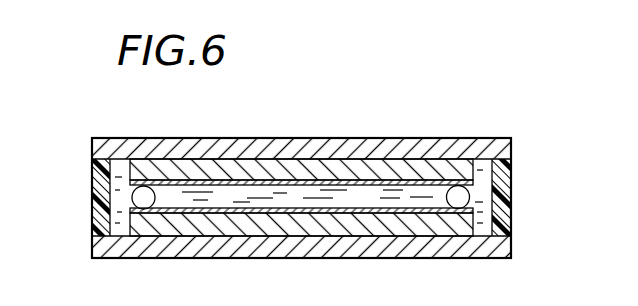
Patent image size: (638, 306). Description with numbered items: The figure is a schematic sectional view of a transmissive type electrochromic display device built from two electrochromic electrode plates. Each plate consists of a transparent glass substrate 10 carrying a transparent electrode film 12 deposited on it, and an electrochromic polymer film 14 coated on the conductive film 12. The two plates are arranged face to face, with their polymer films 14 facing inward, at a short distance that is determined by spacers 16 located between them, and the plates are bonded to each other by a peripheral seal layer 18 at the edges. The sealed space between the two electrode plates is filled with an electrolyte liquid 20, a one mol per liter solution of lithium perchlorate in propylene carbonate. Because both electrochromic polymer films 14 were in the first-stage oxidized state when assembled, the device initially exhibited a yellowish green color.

The transparent glass substrate 10 is at (205, 150).
The transparent electrode film 12 is at (278, 164).
The electrochromic polymer film 14 is at (306, 183).
The spacers 16 is at (511, 197).
The peripheral seal layer 18 is at (98, 203).
The electrolyte liquid 20 is at (180, 198).